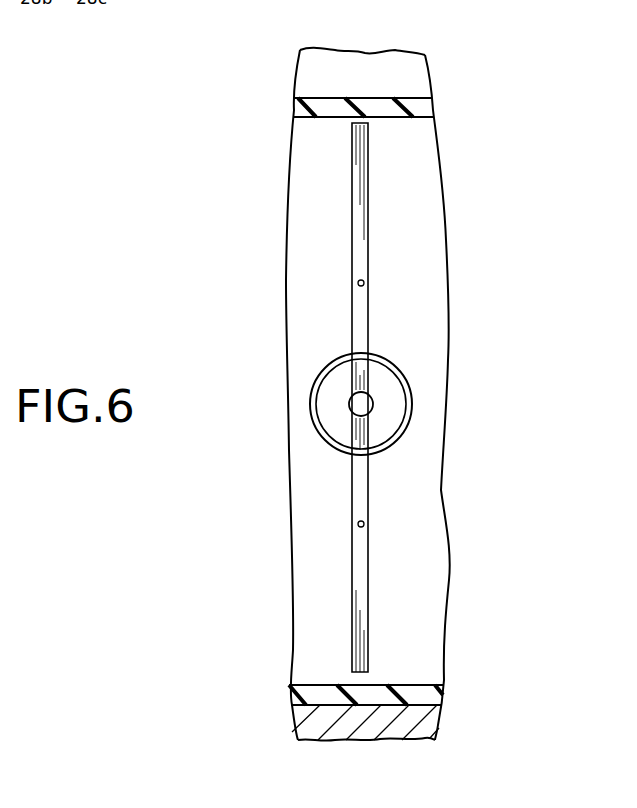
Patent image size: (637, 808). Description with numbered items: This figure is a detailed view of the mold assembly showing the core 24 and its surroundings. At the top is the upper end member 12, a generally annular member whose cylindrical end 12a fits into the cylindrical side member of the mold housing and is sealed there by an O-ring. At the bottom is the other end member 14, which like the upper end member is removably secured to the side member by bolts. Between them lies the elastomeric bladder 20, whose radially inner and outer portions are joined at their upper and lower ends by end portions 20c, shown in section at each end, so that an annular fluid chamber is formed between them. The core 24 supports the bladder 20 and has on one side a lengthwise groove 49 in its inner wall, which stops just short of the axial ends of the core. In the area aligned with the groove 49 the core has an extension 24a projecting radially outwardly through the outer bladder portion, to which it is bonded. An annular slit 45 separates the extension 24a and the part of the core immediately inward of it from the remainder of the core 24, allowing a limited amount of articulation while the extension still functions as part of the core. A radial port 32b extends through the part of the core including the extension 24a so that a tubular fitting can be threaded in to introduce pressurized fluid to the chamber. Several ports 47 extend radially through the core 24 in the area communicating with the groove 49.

The upper end member 12 is at (369, 48).
The cylindrical end 12a is at (330, 80).
The end member 14 is at (328, 722).
The elastomeric bladder 20 is at (452, 694).
The end portions 20c is at (330, 107).
The core 24 is at (320, 195).
The extension 24a is at (338, 428).
The radial port 32b is at (371, 402).
The annular slit 45 is at (322, 378).
The ports 47 is at (358, 283).
The lengthwise groove 49 is at (360, 238).